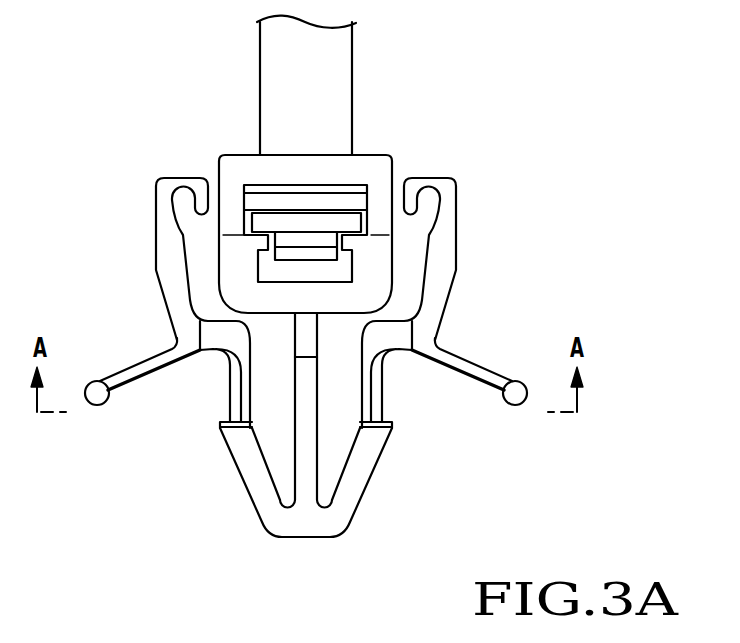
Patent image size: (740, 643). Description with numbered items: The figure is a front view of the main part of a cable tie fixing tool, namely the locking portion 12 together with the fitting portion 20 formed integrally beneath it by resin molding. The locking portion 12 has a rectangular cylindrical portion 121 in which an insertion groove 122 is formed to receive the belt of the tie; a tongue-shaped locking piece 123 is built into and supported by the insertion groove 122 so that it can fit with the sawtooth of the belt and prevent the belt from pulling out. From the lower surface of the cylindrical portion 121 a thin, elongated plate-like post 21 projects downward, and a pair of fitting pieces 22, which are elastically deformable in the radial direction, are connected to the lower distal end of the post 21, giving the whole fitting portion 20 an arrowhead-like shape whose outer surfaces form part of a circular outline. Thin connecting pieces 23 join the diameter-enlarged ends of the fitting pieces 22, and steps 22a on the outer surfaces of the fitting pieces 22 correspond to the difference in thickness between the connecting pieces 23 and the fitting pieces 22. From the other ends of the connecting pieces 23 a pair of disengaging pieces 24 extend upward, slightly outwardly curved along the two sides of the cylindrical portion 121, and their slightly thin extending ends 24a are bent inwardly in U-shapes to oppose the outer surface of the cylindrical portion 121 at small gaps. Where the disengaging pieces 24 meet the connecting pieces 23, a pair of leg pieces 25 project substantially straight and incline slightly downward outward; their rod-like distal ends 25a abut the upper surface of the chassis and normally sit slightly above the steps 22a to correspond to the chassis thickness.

The locking portion 12 is at (323, 153).
The rectangular cylindrical portion 121 is at (375, 163).
The insertion groove 122 is at (277, 270).
The tongue-shaped locking piece 123 is at (298, 250).
The fitting portion 20 is at (304, 331).
The post 21 is at (297, 462).
The fitting pieces 22 is at (243, 465).
The steps 22a is at (390, 424).
The connecting pieces 23 is at (232, 387).
The disengaging pieces 24 is at (165, 246).
The extending ends 24a is at (199, 189).
The leg pieces 25 is at (132, 372).
The distal ends 25a is at (513, 400).